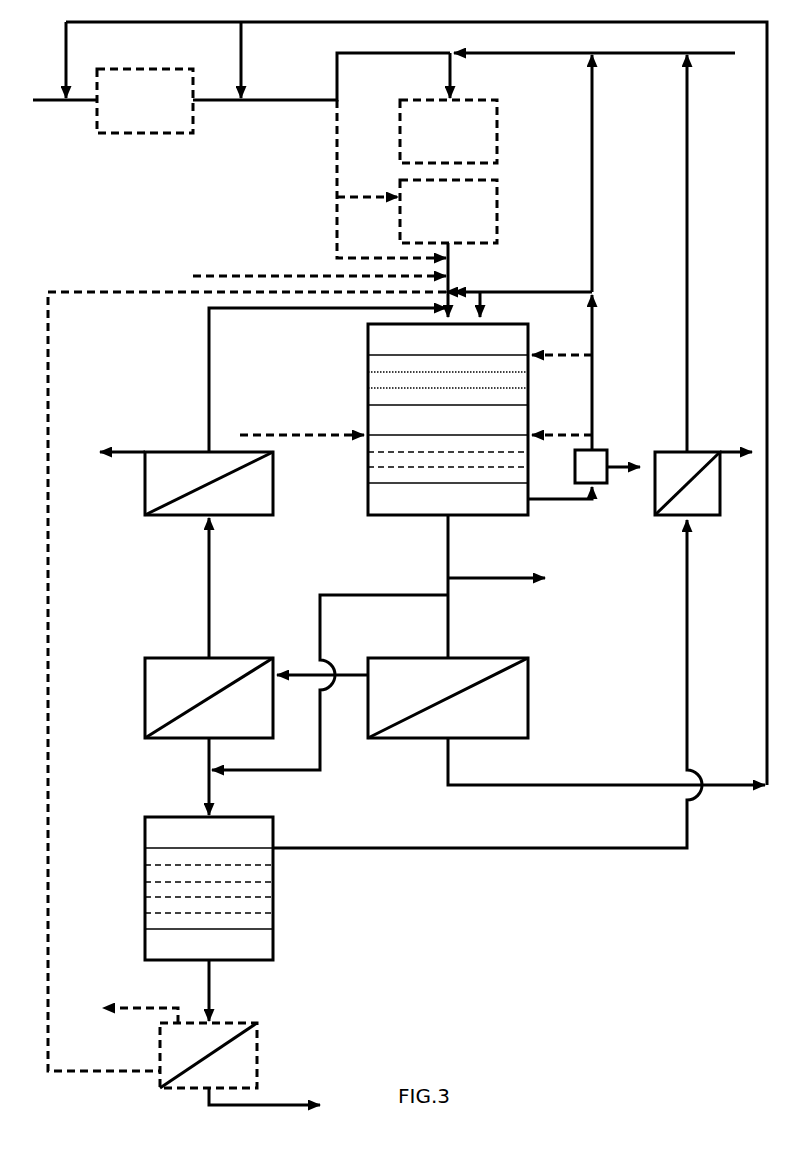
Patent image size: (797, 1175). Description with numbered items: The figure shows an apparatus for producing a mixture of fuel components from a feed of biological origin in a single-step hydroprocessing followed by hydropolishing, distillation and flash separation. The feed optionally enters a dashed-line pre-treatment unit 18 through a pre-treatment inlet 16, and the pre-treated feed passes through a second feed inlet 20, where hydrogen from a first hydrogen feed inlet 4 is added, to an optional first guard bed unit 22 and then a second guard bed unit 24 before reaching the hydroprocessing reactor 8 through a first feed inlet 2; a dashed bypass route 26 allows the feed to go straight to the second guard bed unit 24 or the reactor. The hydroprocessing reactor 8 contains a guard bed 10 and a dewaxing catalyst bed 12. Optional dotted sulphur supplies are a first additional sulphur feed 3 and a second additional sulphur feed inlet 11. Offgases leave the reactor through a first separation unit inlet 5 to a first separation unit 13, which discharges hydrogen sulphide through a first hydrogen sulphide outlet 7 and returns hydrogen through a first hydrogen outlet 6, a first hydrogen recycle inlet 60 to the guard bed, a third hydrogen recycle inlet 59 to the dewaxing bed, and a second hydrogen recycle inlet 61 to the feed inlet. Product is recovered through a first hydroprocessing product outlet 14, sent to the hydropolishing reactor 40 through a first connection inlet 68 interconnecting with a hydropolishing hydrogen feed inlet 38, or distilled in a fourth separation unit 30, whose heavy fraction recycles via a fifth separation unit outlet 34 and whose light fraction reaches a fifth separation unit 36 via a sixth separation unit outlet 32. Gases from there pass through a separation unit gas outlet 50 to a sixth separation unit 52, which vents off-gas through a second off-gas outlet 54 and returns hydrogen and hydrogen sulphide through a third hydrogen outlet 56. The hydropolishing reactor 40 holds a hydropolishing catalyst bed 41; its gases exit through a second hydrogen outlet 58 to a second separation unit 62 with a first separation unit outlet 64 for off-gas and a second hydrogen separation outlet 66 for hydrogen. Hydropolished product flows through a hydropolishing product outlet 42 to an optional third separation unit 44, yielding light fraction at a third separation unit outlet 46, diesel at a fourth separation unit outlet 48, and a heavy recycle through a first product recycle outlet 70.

The first feed inlet 2 is at (452, 308).
The first additional sulphur feed 3 is at (319, 256).
The first hydrogen feed inlet 4 is at (606, 57).
The first separation unit inlet 5 is at (581, 466).
The first hydrogen outlet 6 is at (592, 165).
The first hydrogen sulphide outlet 7 is at (623, 465).
The hydroprocessing reactor 8 is at (365, 325).
The guard bed 10 is at (368, 405).
The second additional sulphur feed inlet 11 is at (292, 425).
The dewaxing catalyst bed 12 is at (365, 463).
The first separation unit 13 is at (592, 468).
The first hydroprocessing product outlet 14 is at (498, 578).
The pre-treatment inlet 16 is at (50, 100).
The pre-treatment unit 18 is at (161, 133).
The second feed inlet 20 is at (448, 86).
The first guard bed unit 22 is at (497, 130).
The second guard bed unit 24 is at (497, 230).
The bypass route 26 is at (337, 165).
The fourth separation unit 30 is at (528, 672).
The sixth separation unit outlet 32 is at (320, 672).
The fifth separation unit outlet 34 is at (512, 785).
The fifth separation unit 36 is at (160, 658).
The hydropolishing hydrogen feed inlet 38 is at (205, 800).
The hydropolishing reactor 40 is at (148, 835).
The hydropolishing catalyst bed 41 is at (265, 882).
The hydropolishing product outlet 42 is at (212, 977).
The third separation unit 44 is at (257, 1073).
The third separation unit outlet 46 is at (145, 1007).
The fourth separation unit outlet 48 is at (209, 1104).
The separation unit gas outlet 50 is at (200, 590).
The sixth separation unit 52 is at (273, 465).
The second off-gas outlet 54 is at (113, 448).
The third hydrogen outlet 56 is at (215, 308).
The second hydrogen outlet 58 is at (465, 848).
The third hydrogen recycle inlet 59 is at (562, 415).
The first hydrogen recycle inlet 60 is at (575, 355).
The second hydrogen recycle inlet 61 is at (545, 292).
The second separation unit 62 is at (655, 452).
The first separation unit outlet 64 is at (735, 450).
The second hydrogen separation outlet 66 is at (687, 277).
The first connection inlet 68 is at (365, 592).
The first product recycle outlet 70 is at (113, 1071).